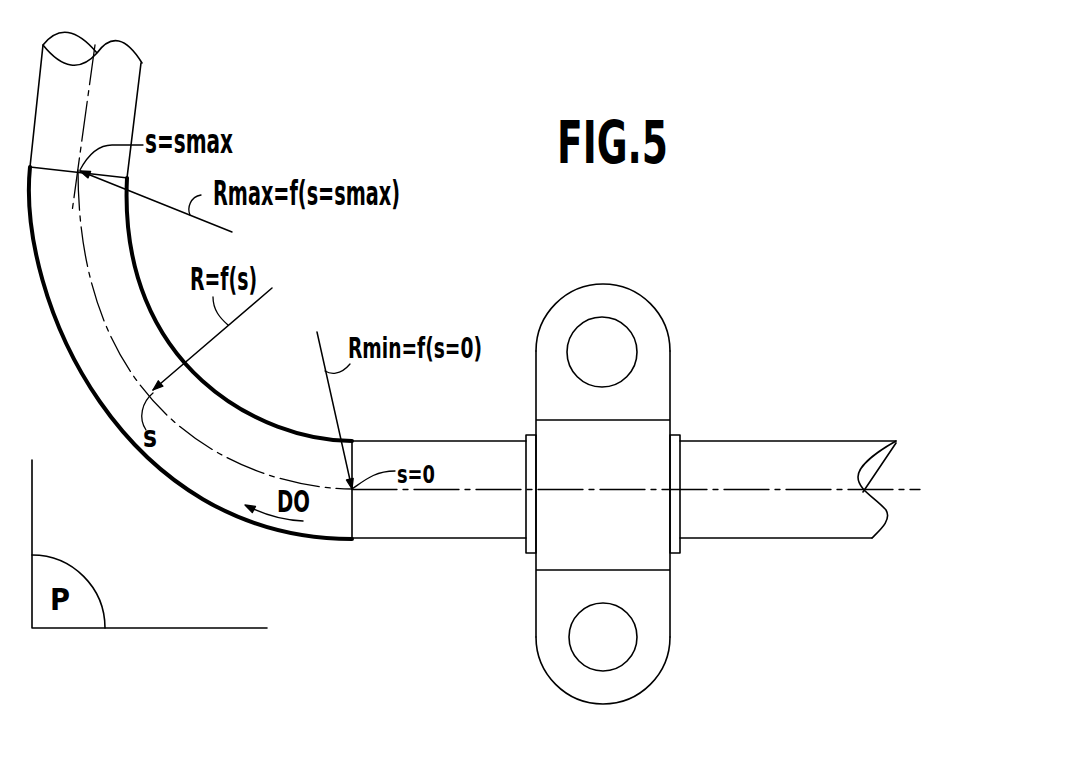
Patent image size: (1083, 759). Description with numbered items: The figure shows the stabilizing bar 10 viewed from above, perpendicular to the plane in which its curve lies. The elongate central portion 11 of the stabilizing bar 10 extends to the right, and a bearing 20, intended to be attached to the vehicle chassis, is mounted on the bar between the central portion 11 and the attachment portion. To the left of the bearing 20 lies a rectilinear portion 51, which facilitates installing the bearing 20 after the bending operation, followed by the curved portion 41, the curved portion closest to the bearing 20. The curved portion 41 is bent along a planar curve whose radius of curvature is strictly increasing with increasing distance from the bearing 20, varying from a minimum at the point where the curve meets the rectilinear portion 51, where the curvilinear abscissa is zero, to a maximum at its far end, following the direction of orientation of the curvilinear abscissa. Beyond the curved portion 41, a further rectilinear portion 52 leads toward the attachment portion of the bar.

The stabilizing bar 10 is at (712, 283).
The central portion 11 is at (775, 463).
The bearing 20 is at (615, 442).
The curved portion 41 is at (153, 470).
The rectilinear portion 51 is at (425, 452).
The rectilinear portion 52 is at (123, 114).